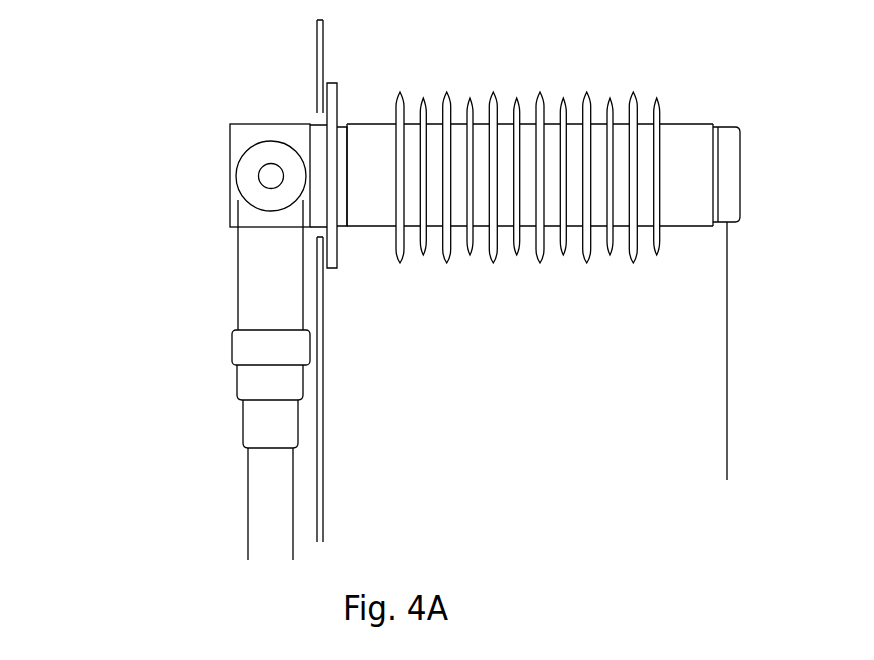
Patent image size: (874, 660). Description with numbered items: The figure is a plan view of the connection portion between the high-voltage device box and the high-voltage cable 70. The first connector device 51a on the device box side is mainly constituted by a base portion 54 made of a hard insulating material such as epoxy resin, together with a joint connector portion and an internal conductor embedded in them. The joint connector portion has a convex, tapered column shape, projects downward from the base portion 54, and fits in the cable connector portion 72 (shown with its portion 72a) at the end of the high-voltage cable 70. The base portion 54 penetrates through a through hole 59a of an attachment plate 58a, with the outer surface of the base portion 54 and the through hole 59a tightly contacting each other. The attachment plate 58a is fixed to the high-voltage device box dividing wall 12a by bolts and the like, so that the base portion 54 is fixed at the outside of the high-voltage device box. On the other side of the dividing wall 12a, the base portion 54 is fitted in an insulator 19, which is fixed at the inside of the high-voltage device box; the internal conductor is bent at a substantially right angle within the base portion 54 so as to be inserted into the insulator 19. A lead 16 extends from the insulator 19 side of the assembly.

The high-voltage device box dividing wall 12a is at (317, 60).
The attachment plate 58a is at (337, 95).
The base portion 54 is at (230, 132).
The cable connector portion 72 is at (169, 262).
The arm portion 72a is at (237, 250).
The first connector device 51a is at (157, 314).
The high-voltage cable 70 is at (243, 497).
The through hole 59a is at (338, 227).
The insulator 19 is at (677, 222).
The lead wire 16 is at (727, 363).